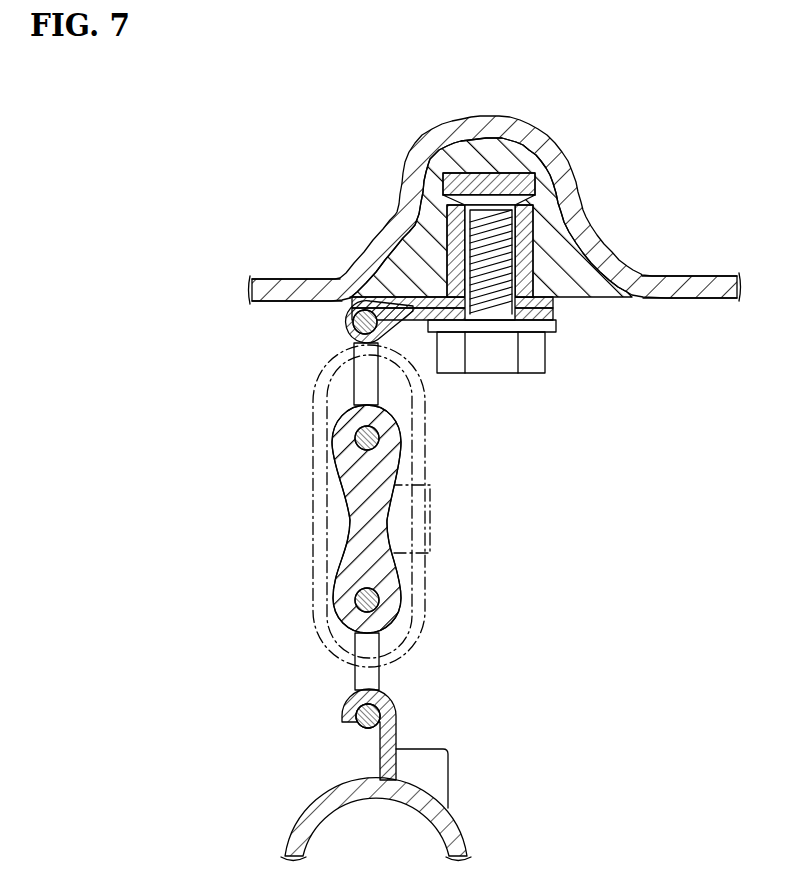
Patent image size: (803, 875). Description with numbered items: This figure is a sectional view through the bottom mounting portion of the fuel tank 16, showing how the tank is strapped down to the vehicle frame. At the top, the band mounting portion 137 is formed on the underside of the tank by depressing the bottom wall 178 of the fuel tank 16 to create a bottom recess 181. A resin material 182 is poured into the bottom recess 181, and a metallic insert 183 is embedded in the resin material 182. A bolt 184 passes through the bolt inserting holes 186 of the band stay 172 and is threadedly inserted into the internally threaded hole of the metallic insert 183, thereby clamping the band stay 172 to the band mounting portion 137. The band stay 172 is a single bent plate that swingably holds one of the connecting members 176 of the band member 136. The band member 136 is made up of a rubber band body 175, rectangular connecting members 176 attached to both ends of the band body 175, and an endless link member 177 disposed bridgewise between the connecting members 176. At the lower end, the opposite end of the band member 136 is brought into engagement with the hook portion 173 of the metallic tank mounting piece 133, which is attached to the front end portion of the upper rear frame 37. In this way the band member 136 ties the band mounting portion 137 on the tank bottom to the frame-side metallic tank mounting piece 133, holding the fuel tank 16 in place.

The fuel tank 16 is at (262, 112).
The band mounting portion 137 is at (560, 137).
The bottom wall 178 is at (283, 287).
The bottom recess 181 is at (488, 148).
The resin material 182 is at (432, 175).
The metallic insert 183 is at (533, 240).
The bolt 184 is at (530, 363).
The bolt inserting holes 186 is at (467, 312).
The band member 136 is at (283, 478).
The band stay 172 is at (350, 320).
The connecting members 176 is at (362, 380).
The rubber band body 175 is at (347, 530).
The endless link member 177 is at (430, 578).
The hook portion 173 is at (343, 707).
The metallic tank mounting piece 133 is at (433, 773).
The upper rear frame 37 is at (310, 813).